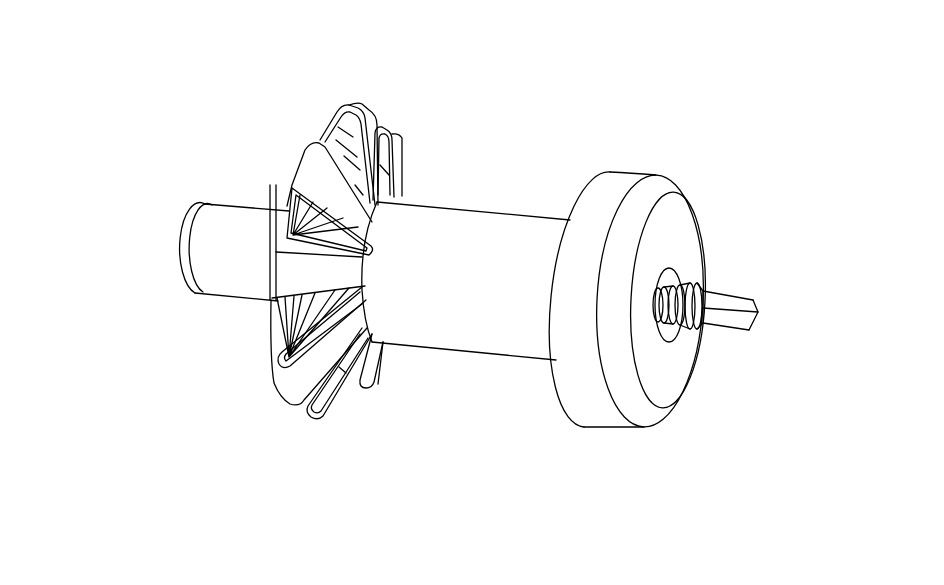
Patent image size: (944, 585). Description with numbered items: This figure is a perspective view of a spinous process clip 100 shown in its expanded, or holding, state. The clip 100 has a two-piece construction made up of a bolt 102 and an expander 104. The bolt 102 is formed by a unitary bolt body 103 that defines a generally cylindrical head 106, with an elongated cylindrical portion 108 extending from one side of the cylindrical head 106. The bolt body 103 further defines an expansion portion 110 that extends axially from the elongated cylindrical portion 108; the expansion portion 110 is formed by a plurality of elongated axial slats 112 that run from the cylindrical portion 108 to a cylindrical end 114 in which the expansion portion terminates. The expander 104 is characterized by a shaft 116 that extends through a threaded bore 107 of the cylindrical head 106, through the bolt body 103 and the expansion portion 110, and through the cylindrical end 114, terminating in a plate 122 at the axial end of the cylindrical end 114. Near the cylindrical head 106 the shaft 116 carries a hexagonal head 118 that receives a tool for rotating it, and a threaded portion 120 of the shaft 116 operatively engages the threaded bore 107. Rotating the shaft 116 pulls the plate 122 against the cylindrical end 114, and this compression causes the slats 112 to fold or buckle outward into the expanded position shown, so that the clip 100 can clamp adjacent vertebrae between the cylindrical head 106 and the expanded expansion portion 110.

The spinous process clip 100 is at (151, 91).
The bolt 102 is at (486, 157).
The bolt body 103 is at (461, 357).
The expander 104 is at (748, 274).
The cylindrical head 106 is at (632, 180).
The threaded bore 107 is at (655, 318).
The elongated cylindrical portion 108 is at (498, 216).
The expansion portion 110 is at (350, 84).
The elongated axial slats 112 is at (307, 160).
The cylindrical end 114 is at (224, 215).
The shaft 116 is at (297, 193).
The hexagonal head 118 is at (742, 322).
The threaded portion 120 is at (706, 290).
The plate 122 is at (183, 247).